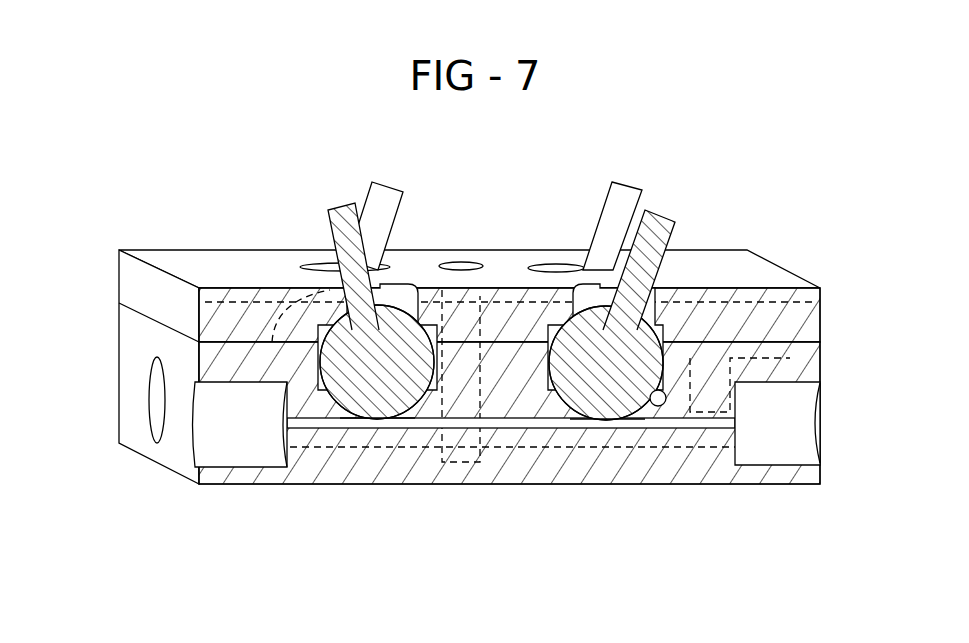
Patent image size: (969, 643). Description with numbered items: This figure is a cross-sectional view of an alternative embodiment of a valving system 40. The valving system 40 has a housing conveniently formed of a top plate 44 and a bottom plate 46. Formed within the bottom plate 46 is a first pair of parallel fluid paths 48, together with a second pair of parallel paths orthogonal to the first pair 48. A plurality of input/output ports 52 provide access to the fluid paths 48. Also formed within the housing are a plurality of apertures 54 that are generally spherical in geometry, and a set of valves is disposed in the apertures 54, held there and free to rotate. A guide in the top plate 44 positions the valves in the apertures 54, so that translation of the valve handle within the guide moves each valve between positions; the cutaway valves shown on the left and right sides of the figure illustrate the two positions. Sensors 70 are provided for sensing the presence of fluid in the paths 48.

The valving system 40 is at (790, 231).
The top plate 44 is at (820, 362).
The bottom plate 46 is at (820, 302).
The first pair of parallel fluid paths 48 is at (517, 425).
The input/output ports 52 is at (153, 402).
The apertures 54 is at (438, 333).
The sensors 70 is at (458, 340).